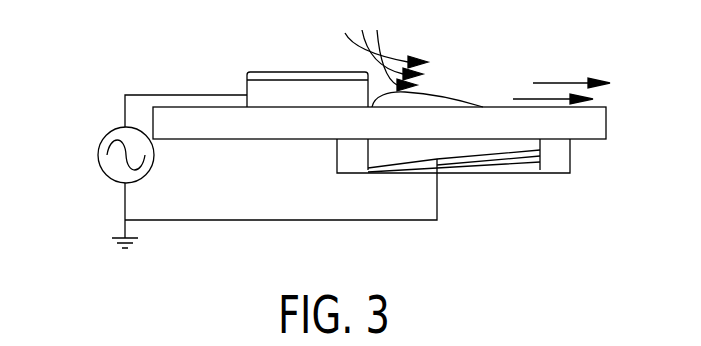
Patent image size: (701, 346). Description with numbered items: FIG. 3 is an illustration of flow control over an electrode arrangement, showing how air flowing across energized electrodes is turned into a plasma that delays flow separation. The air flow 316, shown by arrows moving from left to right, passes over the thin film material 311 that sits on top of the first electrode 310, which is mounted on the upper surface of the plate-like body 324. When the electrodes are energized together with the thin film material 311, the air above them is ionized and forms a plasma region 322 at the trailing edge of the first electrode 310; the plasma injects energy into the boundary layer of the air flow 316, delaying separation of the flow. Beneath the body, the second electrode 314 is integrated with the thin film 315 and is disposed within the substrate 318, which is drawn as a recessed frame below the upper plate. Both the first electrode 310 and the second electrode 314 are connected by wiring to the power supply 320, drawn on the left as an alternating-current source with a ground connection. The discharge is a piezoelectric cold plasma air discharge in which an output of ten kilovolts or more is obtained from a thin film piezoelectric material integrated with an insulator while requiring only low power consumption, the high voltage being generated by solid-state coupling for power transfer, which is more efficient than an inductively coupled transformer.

The first electrode 310 is at (268, 75).
The thin film material 311 is at (328, 73).
The second electrode 314 is at (498, 165).
The thin film 315 is at (527, 163).
The air flow 316 is at (560, 83).
The substrate 318 is at (558, 162).
The power supply 320 is at (97, 156).
The plasma region 322 is at (450, 92).
The substrate 324 is at (262, 140).